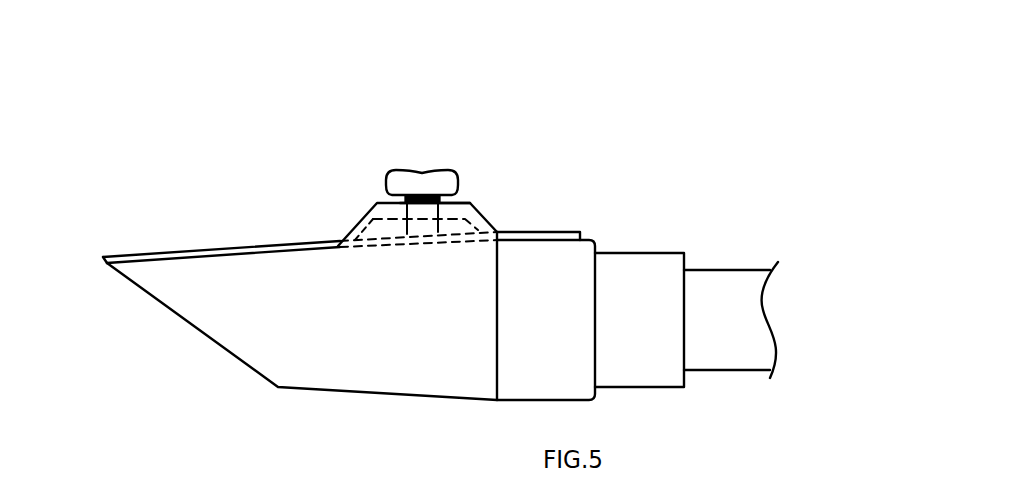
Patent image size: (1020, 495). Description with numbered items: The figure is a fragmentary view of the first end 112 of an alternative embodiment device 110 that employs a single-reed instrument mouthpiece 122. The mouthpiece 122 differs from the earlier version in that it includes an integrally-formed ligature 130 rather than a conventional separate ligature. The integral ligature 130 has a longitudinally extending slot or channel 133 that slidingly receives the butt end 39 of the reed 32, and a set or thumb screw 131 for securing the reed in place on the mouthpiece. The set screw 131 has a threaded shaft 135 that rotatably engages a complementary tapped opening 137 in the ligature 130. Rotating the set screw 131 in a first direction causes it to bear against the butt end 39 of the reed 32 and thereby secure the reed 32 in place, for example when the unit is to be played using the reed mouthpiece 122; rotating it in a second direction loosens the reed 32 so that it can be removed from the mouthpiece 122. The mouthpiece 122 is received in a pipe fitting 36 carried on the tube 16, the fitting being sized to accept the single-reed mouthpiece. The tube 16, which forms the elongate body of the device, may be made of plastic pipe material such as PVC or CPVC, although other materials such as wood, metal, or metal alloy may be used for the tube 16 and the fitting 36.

The alternative embodiment device 110 is at (787, 144).
The first end 112 is at (738, 370).
The tube 16 is at (732, 270).
The pipe fitting 36 is at (632, 253).
The butt end 39 is at (560, 232).
The reed 32 is at (143, 248).
The single-reed instrument mouthpiece 122 is at (246, 367).
The integral ligature 130 is at (475, 213).
The set screw 131 is at (418, 170).
The slot 133 is at (373, 217).
The threaded shaft 135 is at (383, 240).
The tapped opening 137 is at (470, 203).